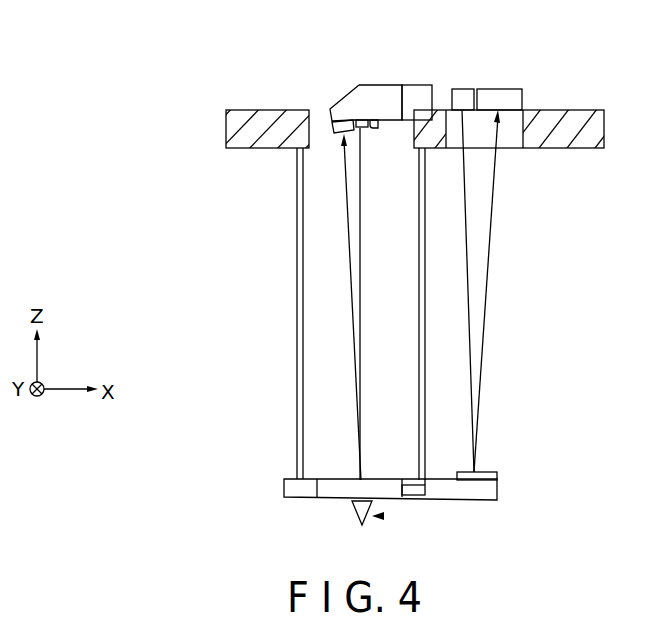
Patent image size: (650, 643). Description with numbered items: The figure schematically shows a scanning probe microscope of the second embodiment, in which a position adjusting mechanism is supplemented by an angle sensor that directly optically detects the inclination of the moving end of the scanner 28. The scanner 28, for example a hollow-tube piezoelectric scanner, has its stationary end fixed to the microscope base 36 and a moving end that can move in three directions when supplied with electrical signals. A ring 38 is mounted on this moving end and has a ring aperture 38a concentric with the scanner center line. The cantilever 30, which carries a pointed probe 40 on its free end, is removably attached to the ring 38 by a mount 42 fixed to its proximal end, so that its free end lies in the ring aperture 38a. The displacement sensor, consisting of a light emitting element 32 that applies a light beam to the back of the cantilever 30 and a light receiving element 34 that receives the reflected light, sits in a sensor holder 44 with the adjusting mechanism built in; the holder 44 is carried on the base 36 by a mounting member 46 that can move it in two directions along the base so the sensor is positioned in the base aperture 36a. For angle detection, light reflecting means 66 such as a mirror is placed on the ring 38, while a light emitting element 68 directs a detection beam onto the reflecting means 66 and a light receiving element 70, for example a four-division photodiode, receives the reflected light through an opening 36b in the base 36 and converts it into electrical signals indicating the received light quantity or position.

The scanner 28 is at (297, 250).
The cantilever 30 is at (380, 516).
The light emitting element 32 is at (378, 120).
The light receiving element 34 is at (337, 134).
The microscope base 36 is at (226, 127).
The base aperture 36a is at (370, 141).
The opening 36b is at (504, 134).
The ring 38 is at (284, 490).
The ring aperture 38a is at (339, 489).
The probe 40 is at (352, 513).
The mount 42 is at (405, 483).
The sensor holder 44 is at (340, 106).
The mounting member 46 is at (424, 85).
The light reflecting means 66 is at (488, 471).
The light emitting element 68 is at (468, 88).
The light receiving element 70 is at (523, 94).